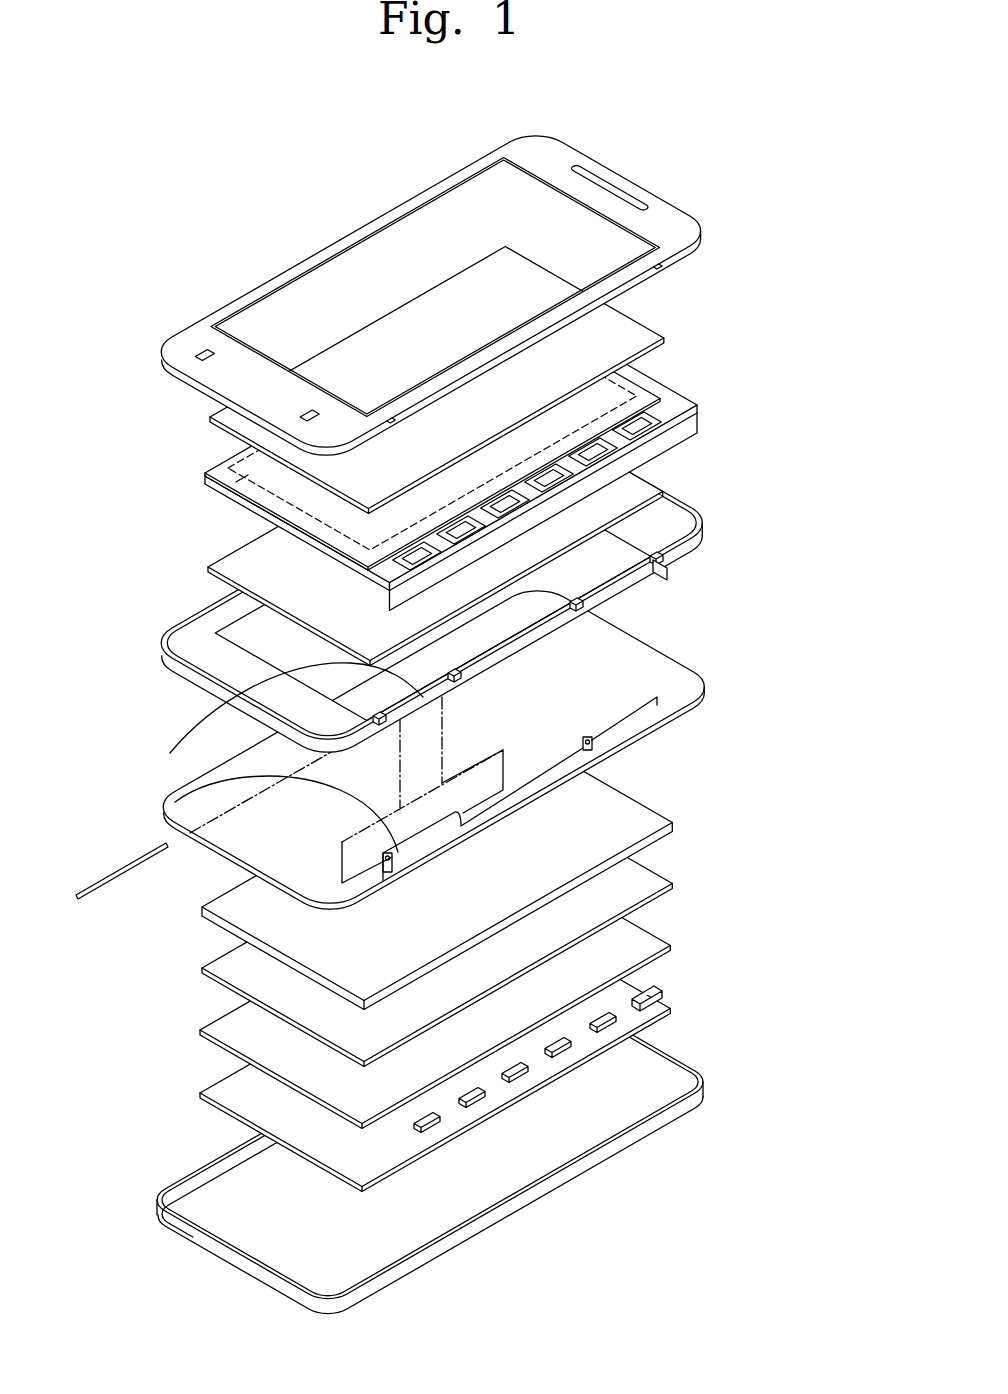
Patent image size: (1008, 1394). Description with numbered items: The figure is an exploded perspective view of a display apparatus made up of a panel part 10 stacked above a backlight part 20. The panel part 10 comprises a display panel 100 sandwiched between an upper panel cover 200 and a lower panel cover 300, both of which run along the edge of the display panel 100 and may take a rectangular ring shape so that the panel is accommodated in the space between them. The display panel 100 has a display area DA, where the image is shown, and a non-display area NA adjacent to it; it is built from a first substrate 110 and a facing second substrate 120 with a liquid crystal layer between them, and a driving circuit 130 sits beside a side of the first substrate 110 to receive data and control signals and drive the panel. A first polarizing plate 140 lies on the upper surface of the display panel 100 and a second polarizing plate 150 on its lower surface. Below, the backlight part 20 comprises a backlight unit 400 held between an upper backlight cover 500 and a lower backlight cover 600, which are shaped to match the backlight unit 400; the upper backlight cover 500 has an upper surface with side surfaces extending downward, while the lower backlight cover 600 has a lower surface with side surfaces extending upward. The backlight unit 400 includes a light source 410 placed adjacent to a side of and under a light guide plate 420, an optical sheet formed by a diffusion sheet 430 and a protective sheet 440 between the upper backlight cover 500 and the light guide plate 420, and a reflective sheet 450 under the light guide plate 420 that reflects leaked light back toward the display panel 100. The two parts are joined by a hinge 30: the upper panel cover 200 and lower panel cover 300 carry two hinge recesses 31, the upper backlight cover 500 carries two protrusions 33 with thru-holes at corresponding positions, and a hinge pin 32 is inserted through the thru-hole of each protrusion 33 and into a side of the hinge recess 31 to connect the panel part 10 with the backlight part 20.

The panel part 10 is at (510, 444).
The backlight part 20 is at (510, 951).
The hinge 30 is at (223, 781).
The hinge recess 31 is at (170, 753).
The hinge pin 32 is at (137, 858).
The protrusion 33 is at (175, 802).
The display panel 100 is at (491, 455).
The first substrate 110 is at (677, 397).
The second substrate 120 is at (647, 387).
The driving circuit 130 is at (662, 424).
The first polarizing plate 140 is at (627, 333).
The second polarizing plate 150 is at (643, 487).
The upper panel cover 200 is at (489, 295).
The lower panel cover 300 is at (673, 530).
The backlight unit 400 is at (516, 960).
The light source 410 is at (489, 1053).
The light guide plate 420 is at (642, 945).
The diffusion sheet 430 is at (642, 880).
The protective sheet 440 is at (776, 1022).
The reflective sheet 450 is at (653, 999).
The upper backlight cover 500 is at (490, 750).
The lower backlight cover 600 is at (673, 1087).
The display area DA is at (253, 473).
The non-display area NA is at (243, 485).